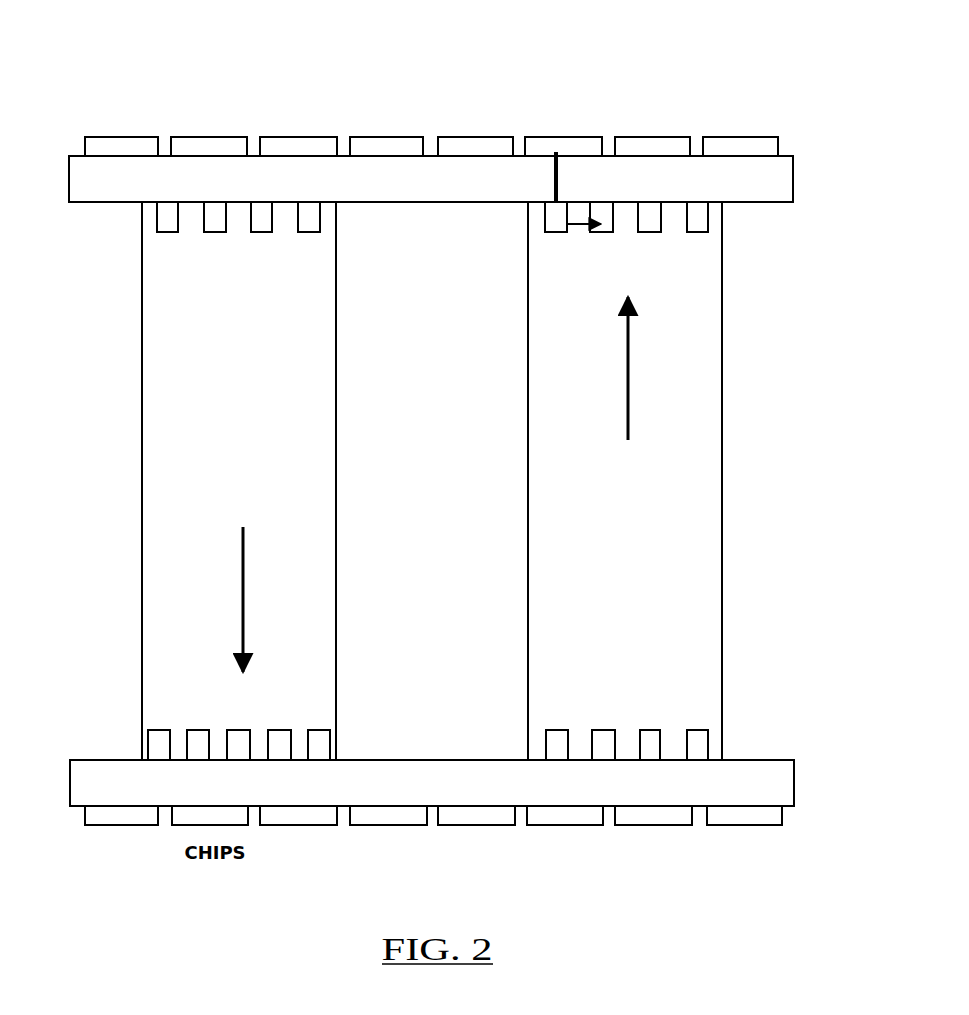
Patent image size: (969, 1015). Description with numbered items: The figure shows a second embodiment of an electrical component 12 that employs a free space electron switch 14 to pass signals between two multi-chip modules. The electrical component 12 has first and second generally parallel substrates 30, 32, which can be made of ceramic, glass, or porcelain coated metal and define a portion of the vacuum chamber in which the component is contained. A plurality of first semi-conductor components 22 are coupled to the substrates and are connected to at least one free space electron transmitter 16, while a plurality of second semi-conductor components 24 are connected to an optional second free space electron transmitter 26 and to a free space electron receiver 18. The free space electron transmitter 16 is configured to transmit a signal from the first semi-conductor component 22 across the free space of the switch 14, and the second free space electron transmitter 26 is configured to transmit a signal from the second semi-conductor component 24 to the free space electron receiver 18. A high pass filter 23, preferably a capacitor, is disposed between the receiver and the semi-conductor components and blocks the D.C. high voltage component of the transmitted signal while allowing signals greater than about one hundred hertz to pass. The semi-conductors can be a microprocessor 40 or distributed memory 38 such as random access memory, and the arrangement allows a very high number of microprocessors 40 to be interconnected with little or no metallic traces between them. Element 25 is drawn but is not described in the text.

The electrical component 12 is at (499, 44).
The free space electron switch 14 is at (158, 544).
The free space electron transmitter 16 is at (168, 230).
The free space electron receiver 18 is at (600, 228).
The first semi-conductor component 22 is at (565, 145).
The high pass filter 23 is at (556, 222).
The second semi-conductor component 24 is at (308, 222).
The pin 25 is at (160, 730).
The second free space electron transmitter 26 is at (700, 732).
The first substrate 30 is at (782, 172).
The second substrate 32 is at (783, 782).
The distributed memory 38 is at (397, 145).
The microprocessor 40 is at (653, 145).